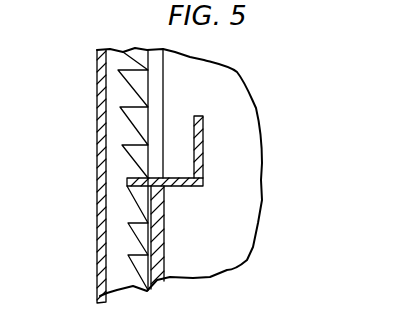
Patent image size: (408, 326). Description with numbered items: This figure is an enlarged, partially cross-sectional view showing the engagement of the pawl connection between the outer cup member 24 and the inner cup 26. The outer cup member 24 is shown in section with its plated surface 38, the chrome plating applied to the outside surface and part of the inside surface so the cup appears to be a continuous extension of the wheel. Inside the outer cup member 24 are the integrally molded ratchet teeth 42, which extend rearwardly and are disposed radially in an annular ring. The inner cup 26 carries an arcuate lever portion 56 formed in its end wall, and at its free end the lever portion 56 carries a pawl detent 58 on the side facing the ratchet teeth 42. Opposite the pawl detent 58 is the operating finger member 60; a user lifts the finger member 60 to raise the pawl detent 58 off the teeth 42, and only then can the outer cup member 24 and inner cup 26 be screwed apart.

The outer cup member 24 is at (83, 86).
The plating 38 is at (97, 131).
The ratchet teeth 42 is at (130, 199).
The pawl detent 58 is at (155, 177).
The operating finger member 60 is at (195, 188).
The lever portion 56 is at (160, 262).
The inner cup 26 is at (180, 231).